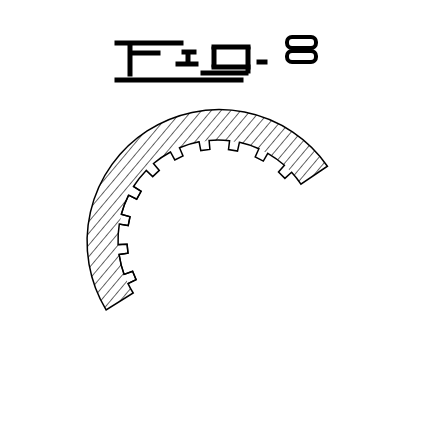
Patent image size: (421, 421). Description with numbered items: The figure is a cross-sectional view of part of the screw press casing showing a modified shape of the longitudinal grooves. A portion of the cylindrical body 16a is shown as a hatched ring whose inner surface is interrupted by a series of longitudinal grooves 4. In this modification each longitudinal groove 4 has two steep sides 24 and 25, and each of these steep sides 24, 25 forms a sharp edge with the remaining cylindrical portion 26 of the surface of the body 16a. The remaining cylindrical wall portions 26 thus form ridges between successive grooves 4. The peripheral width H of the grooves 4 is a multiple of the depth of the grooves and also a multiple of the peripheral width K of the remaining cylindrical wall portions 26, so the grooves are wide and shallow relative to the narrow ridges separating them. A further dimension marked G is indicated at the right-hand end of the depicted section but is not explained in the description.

The body 16a is at (100, 185).
The steep side 25 is at (148, 198).
The steep side 24 is at (131, 212).
The remaining cylindrical portion 26 is at (127, 229).
The longitudinal groove 4 is at (121, 269).
The peripheral width of the grooves H is at (230, 170).
The peripheral width of the remaining cylindrical wall portions K is at (256, 148).
The dimension G is at (292, 168).